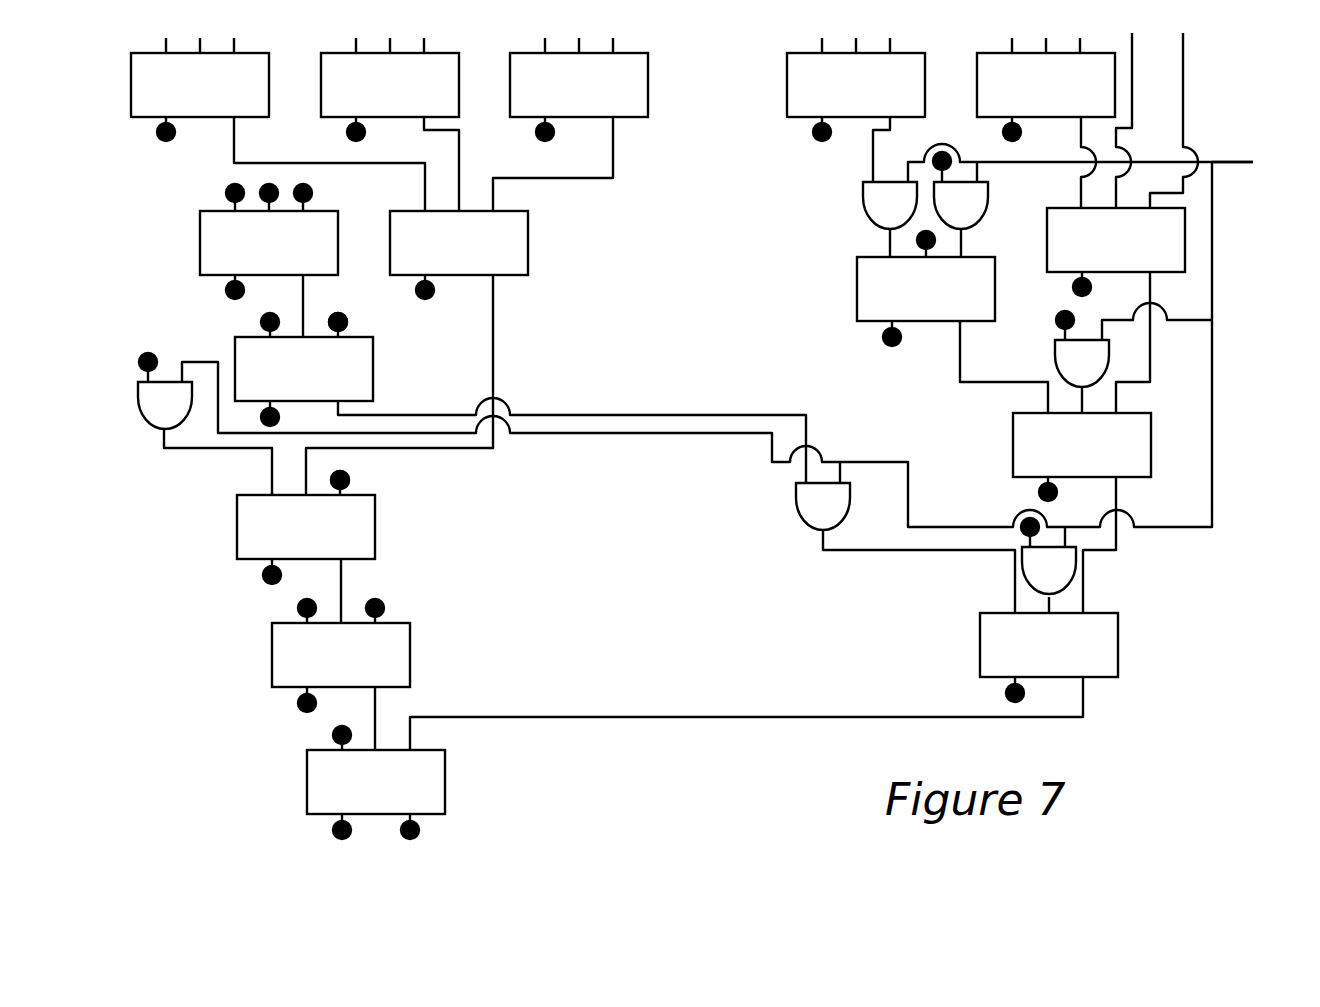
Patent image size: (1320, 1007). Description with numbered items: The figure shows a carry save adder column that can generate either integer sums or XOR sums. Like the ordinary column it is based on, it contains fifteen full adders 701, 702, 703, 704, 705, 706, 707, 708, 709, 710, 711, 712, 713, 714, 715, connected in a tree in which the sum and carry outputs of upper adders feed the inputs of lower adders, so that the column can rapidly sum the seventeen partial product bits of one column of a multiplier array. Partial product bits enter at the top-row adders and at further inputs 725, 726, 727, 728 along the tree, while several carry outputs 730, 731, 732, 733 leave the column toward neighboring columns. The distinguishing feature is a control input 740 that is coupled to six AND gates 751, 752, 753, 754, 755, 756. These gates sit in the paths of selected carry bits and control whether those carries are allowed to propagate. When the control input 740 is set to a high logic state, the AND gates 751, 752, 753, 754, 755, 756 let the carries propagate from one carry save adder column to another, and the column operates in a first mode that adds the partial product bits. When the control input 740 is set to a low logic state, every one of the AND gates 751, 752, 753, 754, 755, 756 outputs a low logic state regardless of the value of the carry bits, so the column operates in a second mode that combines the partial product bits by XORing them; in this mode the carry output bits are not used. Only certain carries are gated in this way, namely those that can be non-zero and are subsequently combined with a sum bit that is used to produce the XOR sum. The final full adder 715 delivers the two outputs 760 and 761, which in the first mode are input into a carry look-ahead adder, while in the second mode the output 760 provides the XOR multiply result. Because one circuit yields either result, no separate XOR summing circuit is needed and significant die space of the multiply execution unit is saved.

The full adder 701 is at (149, 53).
The full adder 702 is at (339, 53).
The full adder 703 is at (528, 53).
The full adder 704 is at (806, 53).
The full adder 705 is at (996, 53).
The full adder 706 is at (219, 211).
The full adder 707 is at (409, 211).
The full adder 708 is at (875, 257).
The full adder 709 is at (1064, 208).
The full adder 710 is at (254, 337).
The full adder 711 is at (1032, 413).
The full adder 712 is at (247, 495).
The full adder 713 is at (999, 613).
The full adder 714 is at (292, 623).
The full adder 715 is at (327, 750).
The input 725 is at (226, 190).
The input 726 is at (140, 362).
The input 727 is at (348, 322).
The input 728 is at (350, 480).
The carry output 730 is at (157, 132).
The carry output 731 is at (347, 132).
The carry output 732 is at (813, 132).
The carry output 733 is at (883, 337).
The control input 740 is at (1219, 163).
The AND gate 751 is at (138, 390).
The AND gate 752 is at (863, 190).
The AND gate 753 is at (988, 212).
The AND gate 754 is at (1055, 348).
The AND gate 755 is at (796, 493).
The AND gate 756 is at (1022, 560).
The input to carry look-ahead adder / XOR multiply result 760 is at (420, 830).
The input to carry look-ahead adder 761 is at (342, 840).